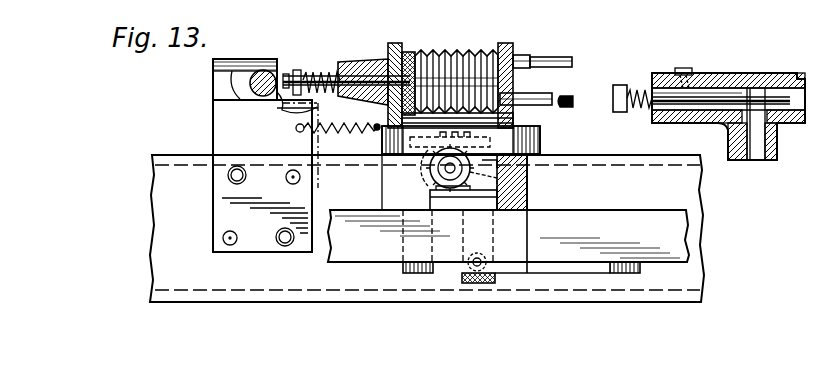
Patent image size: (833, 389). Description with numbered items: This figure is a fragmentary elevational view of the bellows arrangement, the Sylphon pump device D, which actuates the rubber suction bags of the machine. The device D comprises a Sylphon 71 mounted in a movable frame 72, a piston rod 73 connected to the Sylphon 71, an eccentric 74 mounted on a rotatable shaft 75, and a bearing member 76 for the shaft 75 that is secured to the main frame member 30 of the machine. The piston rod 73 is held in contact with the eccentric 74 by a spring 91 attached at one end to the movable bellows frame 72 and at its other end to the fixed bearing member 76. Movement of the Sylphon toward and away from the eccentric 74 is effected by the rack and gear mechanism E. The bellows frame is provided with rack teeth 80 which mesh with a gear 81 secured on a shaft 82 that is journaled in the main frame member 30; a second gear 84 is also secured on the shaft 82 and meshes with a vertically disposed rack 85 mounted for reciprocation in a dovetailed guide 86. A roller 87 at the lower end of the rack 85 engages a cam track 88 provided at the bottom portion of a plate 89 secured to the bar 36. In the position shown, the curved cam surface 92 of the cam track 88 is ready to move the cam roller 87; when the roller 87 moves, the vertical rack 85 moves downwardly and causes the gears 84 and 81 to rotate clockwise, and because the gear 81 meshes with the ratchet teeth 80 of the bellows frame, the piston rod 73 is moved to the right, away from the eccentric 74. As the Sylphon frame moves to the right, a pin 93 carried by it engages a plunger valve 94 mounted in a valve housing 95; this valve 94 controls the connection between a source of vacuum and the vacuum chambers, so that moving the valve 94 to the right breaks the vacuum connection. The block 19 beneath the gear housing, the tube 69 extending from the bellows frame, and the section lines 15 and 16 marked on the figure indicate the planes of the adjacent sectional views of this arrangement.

The section line 15- 15 is at (262, 35).
The section line 16- 16 is at (565, 25).
The bearing block 19 is at (540, 135).
The main frame member 30 is at (695, 277).
The bar 36 is at (675, 235).
The air tube 69 is at (573, 55).
The Sylphon 71 is at (480, 50).
The movable frame 72 is at (513, 45).
The piston rod 73 is at (323, 72).
The eccentric 74 is at (230, 103).
The rotatable shaft 75 is at (240, 70).
The bearing member 76 is at (213, 130).
The rack teeth 80 is at (395, 157).
The gear 81 is at (400, 198).
The shaft 82 is at (470, 187).
The second gear 84 is at (510, 185).
The vertically disposed rack 85 is at (503, 160).
The dovetailed guide 86 is at (437, 188).
The roller 87 is at (487, 283).
The cam track 88 is at (622, 277).
The plate 89 is at (640, 268).
The spring 91 is at (368, 127).
The curved cam surface 92 is at (450, 265).
The pin 93 is at (566, 96).
The plunger valve 94 is at (713, 90).
The valve housing 95 is at (772, 73).
The Sylphon pump device D is at (457, 75).
The rack and gear mechanism E is at (432, 170).